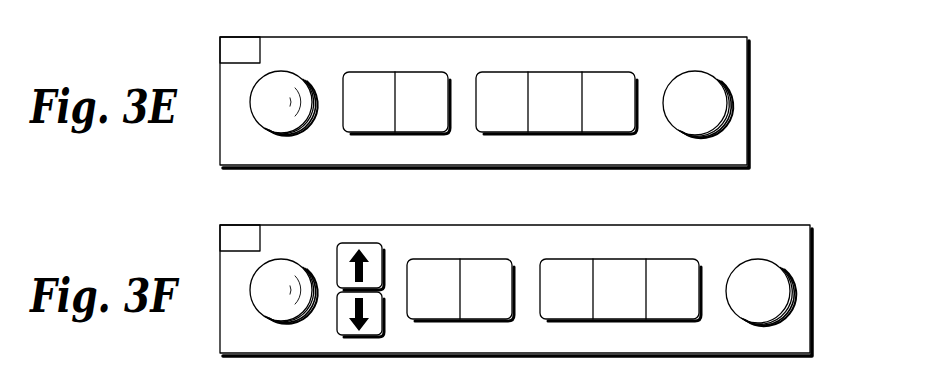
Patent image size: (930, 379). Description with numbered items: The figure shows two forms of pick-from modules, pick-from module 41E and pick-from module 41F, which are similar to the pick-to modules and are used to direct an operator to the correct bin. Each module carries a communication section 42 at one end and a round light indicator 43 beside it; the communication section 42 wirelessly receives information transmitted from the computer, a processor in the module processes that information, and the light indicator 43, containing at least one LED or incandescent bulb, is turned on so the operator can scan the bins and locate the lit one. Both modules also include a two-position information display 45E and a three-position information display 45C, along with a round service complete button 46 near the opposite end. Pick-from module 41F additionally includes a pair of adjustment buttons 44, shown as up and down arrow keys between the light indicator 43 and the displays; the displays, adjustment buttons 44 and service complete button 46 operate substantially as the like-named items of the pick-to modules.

In FIG. 3E, the pick-from module 41E is at (730, 37).
In FIG. 3F, the pick-from module 41F is at (787, 225).
In FIG. 3E, the communication section 42 is at (229, 52).
In FIG. 3F, the communication section 42 is at (229, 240).
In FIG. 3E, the light indicator 43 is at (268, 117).
In FIG. 3F, the light indicator 43 is at (268, 305).
In FIG. 3F, the adjustment buttons 44 is at (347, 245).
In FIG. 3E, the information display 45E is at (408, 72).
In FIG. 3F, the information display 45E is at (472, 259).
In FIG. 3E, the information display 45C is at (541, 72).
In FIG. 3F, the information display 45C is at (605, 259).
In FIG. 3E, the service complete button 46 is at (697, 82).
In FIG. 3F, the service complete button 46 is at (762, 268).